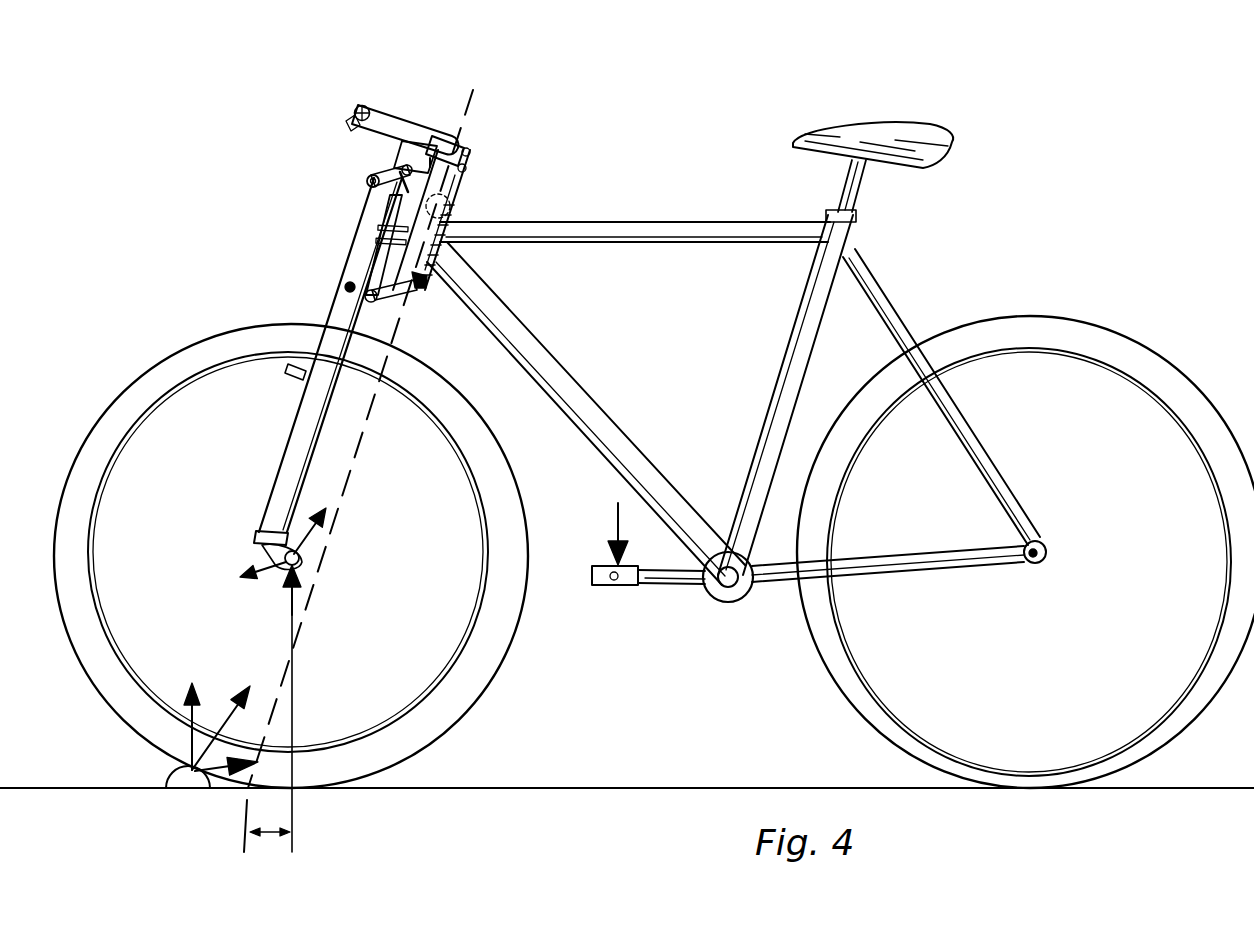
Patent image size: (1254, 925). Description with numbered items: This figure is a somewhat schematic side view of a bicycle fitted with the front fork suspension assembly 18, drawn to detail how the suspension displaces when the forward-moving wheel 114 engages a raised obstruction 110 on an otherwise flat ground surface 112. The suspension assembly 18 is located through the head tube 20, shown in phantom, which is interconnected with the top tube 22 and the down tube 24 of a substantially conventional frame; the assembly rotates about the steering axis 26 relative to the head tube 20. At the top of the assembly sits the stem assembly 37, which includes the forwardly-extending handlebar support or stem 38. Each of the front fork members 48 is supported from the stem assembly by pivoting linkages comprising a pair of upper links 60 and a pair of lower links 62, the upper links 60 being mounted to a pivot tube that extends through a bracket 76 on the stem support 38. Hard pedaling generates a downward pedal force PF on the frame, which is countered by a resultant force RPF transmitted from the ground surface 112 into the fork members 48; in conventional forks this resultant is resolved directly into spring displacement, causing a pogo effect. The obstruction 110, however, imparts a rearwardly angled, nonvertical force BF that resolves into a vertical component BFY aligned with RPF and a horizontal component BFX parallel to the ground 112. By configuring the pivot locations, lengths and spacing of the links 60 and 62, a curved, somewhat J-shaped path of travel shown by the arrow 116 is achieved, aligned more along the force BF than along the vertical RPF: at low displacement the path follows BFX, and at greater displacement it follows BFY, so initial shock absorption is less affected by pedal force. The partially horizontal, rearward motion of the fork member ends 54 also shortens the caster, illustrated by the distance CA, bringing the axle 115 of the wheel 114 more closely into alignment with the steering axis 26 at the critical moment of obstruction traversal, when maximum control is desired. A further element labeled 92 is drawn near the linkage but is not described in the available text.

The front fork suspension assembly 18 is at (306, 224).
The head tube 20 is at (445, 215).
The top tube 22 is at (632, 232).
The down tube 24 is at (518, 330).
The steering axis 26 is at (462, 124).
The stem assembly 37 is at (438, 96).
The handlebar support 38 is at (384, 92).
The front fork members 48 is at (307, 417).
The fork member ends 54 is at (262, 560).
The upper links 60 is at (370, 178).
The lower links 62 is at (397, 303).
The bracket 76 is at (398, 148).
The brake arm 92 is at (373, 232).
The raised obstruction 110 is at (172, 792).
The ground surface 112 is at (626, 788).
The wheel 114 is at (466, 688).
The axle 115 is at (258, 548).
The curved path of travel arrow 116 is at (318, 545).
The pedal force PF is at (612, 530).
The pedal resultant force RPF is at (293, 610).
The obstruction force BF is at (224, 713).
The horizontal force component BFX is at (220, 775).
The vertical force component BFY is at (178, 712).
The caster distance CA is at (265, 836).